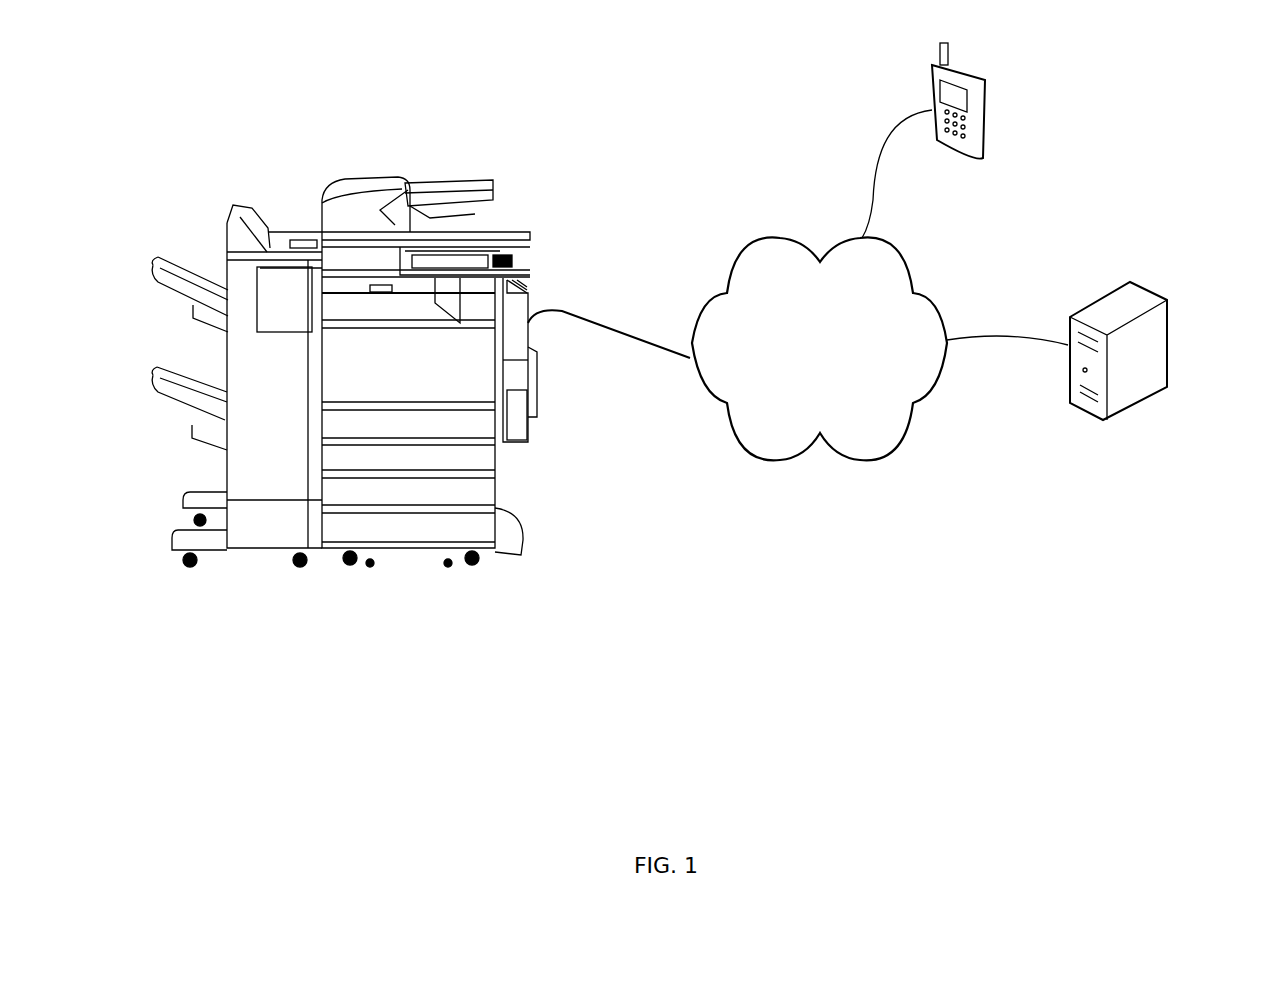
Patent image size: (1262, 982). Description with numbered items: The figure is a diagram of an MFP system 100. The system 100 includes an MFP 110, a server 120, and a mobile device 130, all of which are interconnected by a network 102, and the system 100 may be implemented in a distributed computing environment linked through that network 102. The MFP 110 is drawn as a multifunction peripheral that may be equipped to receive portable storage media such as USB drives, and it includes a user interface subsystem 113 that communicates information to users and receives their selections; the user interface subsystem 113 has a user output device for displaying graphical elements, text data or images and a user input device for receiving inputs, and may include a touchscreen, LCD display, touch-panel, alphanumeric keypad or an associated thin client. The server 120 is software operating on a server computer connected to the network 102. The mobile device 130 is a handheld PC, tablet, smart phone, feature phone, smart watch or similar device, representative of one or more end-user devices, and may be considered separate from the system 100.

The MFP system 100 is at (749, 111).
The network 102 is at (819, 348).
The MFP 110 is at (432, 185).
The user interface subsystem 113 is at (475, 260).
The server 120 is at (1167, 308).
The mobile device 130 is at (988, 109).